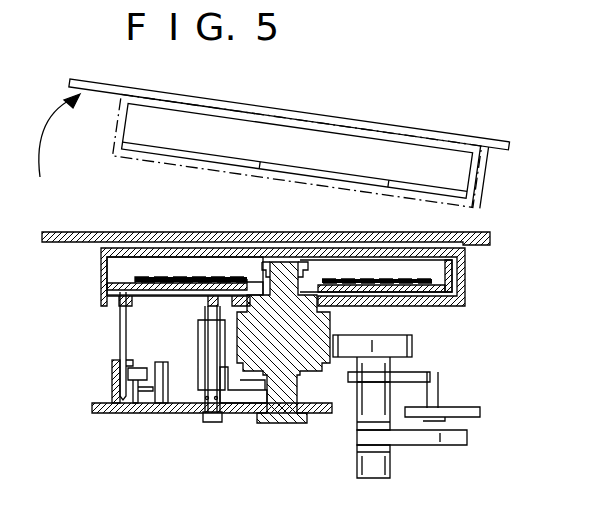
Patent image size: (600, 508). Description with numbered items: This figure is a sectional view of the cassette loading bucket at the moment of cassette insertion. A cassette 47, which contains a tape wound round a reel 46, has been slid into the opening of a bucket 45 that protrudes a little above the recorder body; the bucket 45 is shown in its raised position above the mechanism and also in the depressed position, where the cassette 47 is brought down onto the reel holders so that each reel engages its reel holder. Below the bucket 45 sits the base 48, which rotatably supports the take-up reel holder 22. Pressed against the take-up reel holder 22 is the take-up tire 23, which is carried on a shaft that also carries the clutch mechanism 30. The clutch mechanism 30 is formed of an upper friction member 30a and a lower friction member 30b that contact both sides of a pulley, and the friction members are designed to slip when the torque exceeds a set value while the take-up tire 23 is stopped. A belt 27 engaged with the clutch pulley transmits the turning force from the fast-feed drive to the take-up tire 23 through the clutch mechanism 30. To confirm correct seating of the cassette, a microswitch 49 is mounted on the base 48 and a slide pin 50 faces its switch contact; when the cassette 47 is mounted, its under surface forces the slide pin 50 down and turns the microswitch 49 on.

The bucket 45 is at (441, 128).
The cassette 47 is at (120, 126).
The reel 46 is at (108, 285).
The take-up reel holder 22 is at (330, 318).
The take-up tire 23 is at (413, 347).
The base 48 is at (152, 413).
The slide pin 50 is at (127, 348).
The microswitch 49 is at (163, 373).
The clutch mechanism 30 is at (302, 457).
The upper friction member 30a is at (358, 425).
The lower friction member 30b is at (358, 453).
The belt 27 is at (433, 446).